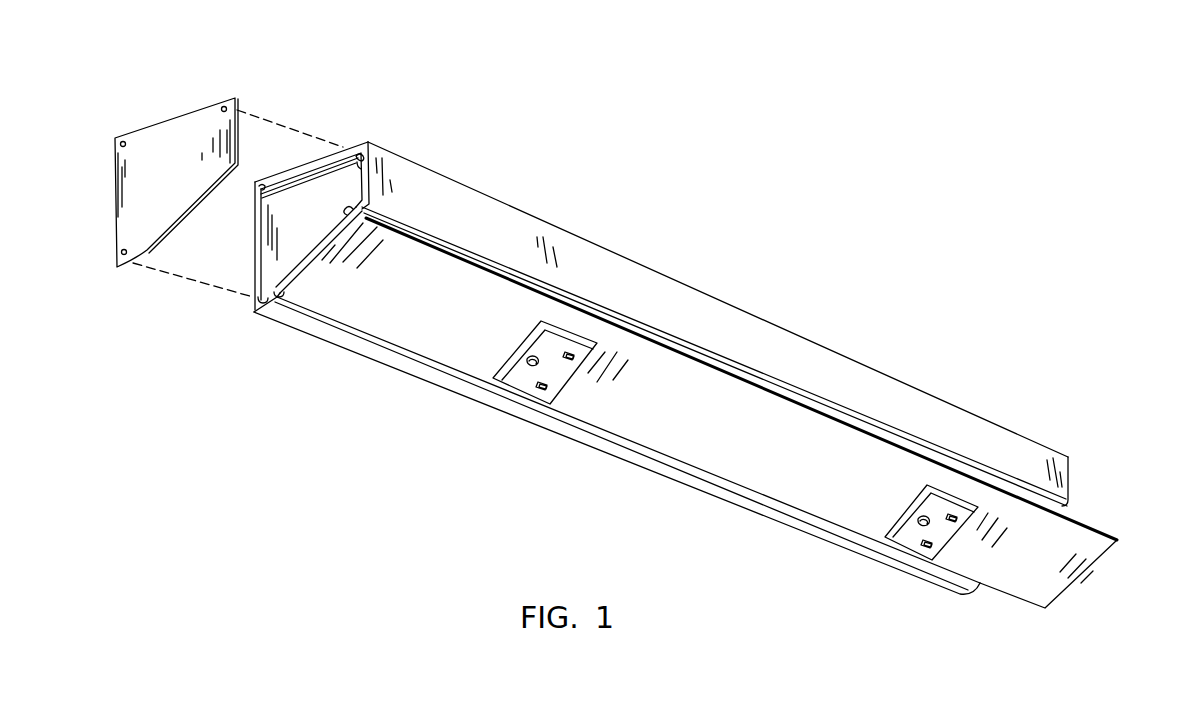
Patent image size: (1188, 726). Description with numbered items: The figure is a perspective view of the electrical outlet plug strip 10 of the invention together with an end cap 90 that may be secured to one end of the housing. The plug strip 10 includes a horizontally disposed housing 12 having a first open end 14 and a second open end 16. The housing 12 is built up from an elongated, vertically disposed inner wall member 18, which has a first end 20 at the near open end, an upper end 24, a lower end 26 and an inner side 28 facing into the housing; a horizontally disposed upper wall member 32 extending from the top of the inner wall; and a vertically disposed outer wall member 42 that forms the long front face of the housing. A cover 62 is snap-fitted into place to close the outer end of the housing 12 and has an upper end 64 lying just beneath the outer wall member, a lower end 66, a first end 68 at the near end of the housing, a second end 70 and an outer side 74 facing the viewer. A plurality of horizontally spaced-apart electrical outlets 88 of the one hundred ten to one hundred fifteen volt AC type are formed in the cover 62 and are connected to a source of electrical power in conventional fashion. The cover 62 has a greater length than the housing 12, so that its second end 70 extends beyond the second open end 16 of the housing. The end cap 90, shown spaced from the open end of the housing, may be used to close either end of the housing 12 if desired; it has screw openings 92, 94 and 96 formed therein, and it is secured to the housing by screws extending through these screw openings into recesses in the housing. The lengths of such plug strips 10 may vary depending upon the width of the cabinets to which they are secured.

The plug strip 10 is at (768, 286).
The housing 12 is at (526, 202).
The first open end 14 is at (333, 128).
The second open end 16 is at (1080, 470).
The inner wall member 18 is at (249, 230).
The first end 20 is at (252, 257).
The upper end 24 is at (254, 183).
The lower end 26 is at (255, 304).
The inner side 28 is at (291, 253).
The upper wall member 32 is at (337, 148).
The outer wall member 42 is at (887, 391).
The cover 62 is at (706, 450).
The upper end 64 is at (1088, 523).
The lower end 66 is at (1004, 597).
The first end 68 is at (325, 262).
The second end 70 is at (1088, 572).
The outer side 74 is at (806, 479).
The electrical outlets 88 is at (515, 398).
The end cap 90 is at (164, 112).
The screw opening 92 is at (112, 249).
The screw opening 94 is at (114, 143).
The screw opening 96 is at (226, 106).